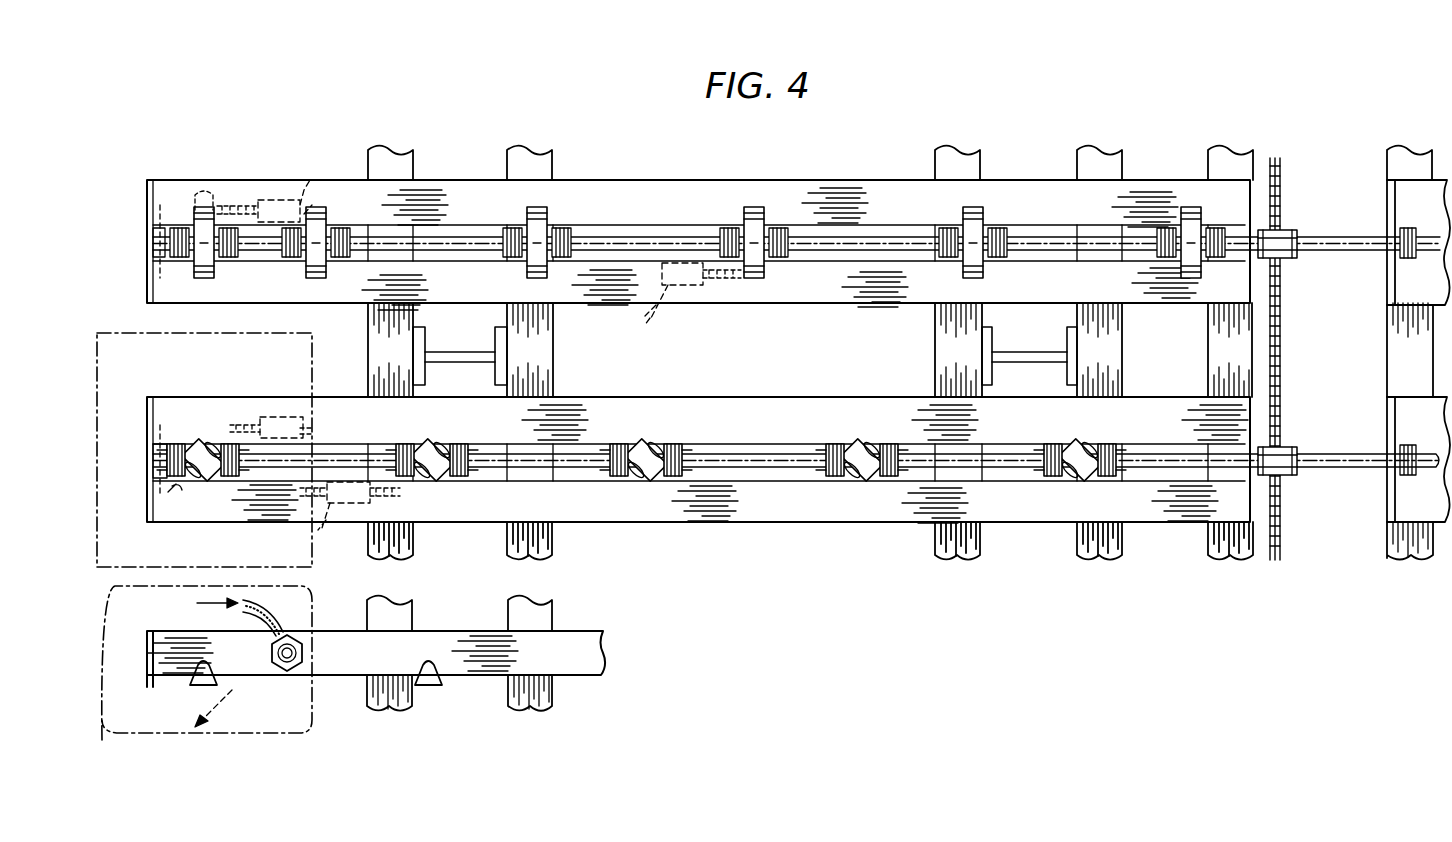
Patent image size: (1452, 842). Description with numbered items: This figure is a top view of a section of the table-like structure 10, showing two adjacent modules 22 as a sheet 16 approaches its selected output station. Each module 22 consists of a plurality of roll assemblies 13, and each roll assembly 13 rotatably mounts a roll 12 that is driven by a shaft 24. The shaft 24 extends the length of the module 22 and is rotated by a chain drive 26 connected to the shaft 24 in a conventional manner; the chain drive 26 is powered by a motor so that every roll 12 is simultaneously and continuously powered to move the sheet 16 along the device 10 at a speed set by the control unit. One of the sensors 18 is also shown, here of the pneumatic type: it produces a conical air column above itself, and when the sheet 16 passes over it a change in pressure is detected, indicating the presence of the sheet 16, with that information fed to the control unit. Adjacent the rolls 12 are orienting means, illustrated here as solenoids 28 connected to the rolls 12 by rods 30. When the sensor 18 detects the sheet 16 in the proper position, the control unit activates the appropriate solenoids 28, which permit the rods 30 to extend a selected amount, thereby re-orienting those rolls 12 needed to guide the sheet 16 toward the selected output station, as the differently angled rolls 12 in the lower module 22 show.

The table-like structure 10 is at (788, 528).
The roll 12 is at (754, 207).
The roll assembly 13 is at (986, 273).
The sheet 16 is at (157, 735).
The sensor 18 is at (288, 671).
The module 22 is at (866, 190).
The shaft 24 is at (613, 245).
The chain drive 26 is at (1282, 366).
The solenoid 28 is at (284, 198).
The rod 30 is at (234, 206).